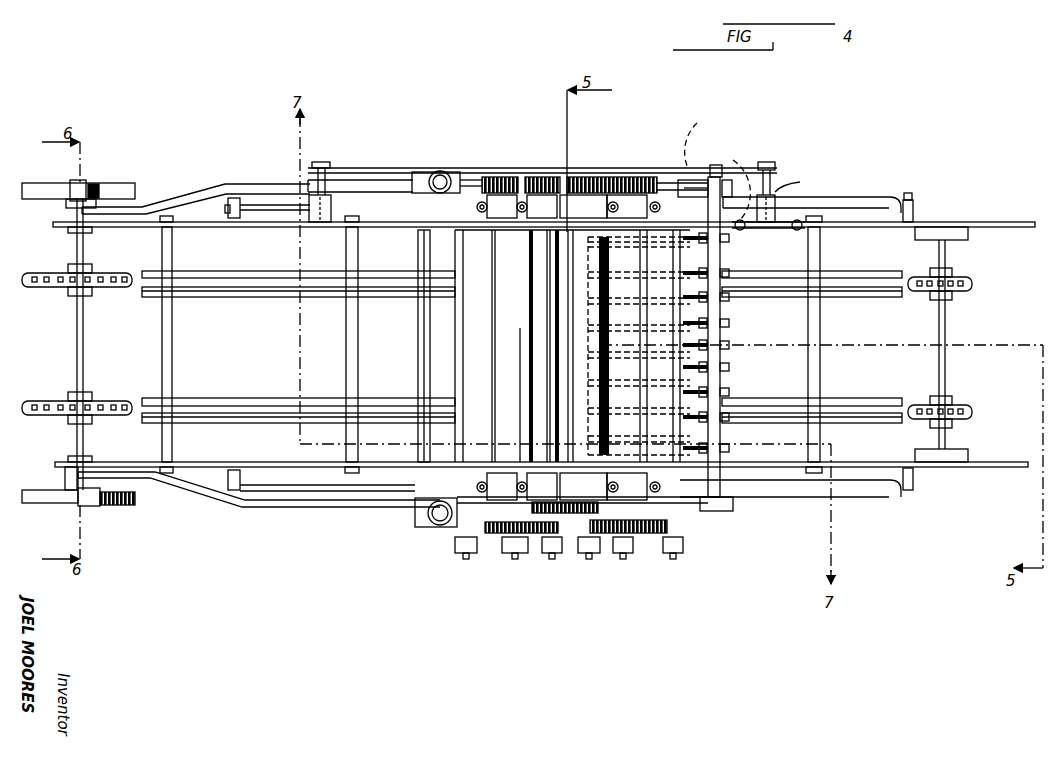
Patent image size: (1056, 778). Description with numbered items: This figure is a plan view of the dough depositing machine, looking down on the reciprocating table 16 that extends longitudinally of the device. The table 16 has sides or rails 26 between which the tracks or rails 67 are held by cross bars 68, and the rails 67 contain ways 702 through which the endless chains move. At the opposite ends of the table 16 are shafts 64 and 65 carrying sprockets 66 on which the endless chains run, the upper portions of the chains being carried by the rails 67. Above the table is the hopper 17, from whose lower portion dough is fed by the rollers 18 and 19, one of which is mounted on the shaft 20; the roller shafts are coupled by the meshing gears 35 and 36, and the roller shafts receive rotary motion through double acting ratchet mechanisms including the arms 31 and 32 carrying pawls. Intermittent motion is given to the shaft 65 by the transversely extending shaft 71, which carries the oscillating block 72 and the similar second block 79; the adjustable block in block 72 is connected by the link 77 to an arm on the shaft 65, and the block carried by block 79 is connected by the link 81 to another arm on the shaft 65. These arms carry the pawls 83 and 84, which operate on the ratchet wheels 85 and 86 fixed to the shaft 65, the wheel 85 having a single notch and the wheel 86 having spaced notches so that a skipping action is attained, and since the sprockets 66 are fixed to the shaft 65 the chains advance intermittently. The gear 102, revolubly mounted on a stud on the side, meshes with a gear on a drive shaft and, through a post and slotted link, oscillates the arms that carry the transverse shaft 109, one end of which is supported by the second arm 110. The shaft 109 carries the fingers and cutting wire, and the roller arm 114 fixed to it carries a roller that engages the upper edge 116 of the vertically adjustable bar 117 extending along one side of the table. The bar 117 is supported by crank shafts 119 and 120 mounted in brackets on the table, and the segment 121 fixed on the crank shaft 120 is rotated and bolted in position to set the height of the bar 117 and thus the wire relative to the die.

The reciprocating table 16 is at (347, 428).
The hopper 17 is at (507, 478).
The roller 18 is at (587, 289).
The roller 19 is at (500, 266).
The shaft 20 is at (528, 553).
The sides or rails 26 is at (832, 197).
The arm 31 is at (659, 540).
The arm 32 is at (608, 545).
The gear 35 is at (560, 178).
The gear 36 is at (500, 178).
The shaft 64 is at (946, 327).
The shaft 65 is at (76, 328).
The sprockets 66 is at (33, 288).
The tracks or rails 67 is at (200, 397).
The cross bars 68 is at (162, 361).
The transversely extending shaft 71 is at (424, 353).
The oscillating block 72 is at (440, 170).
The link 77 is at (232, 197).
The second block 79 is at (432, 527).
The link 81 is at (212, 492).
The pawl 83 is at (93, 190).
The pawl 84 is at (97, 508).
The ratchet wheel 85 is at (123, 188).
The ratchet wheel 86 is at (132, 508).
The gear 102 is at (570, 516).
The shaft 109 is at (714, 165).
The second arm 110 is at (697, 170).
The roller arm 114 is at (671, 176).
The upper edge 116 is at (393, 168).
The vertically adjustable bar 117 is at (354, 180).
The crank shaft 119 is at (320, 162).
The crank shaft 120 is at (766, 165).
The segment 121 is at (796, 180).
The ways 702 is at (246, 412).